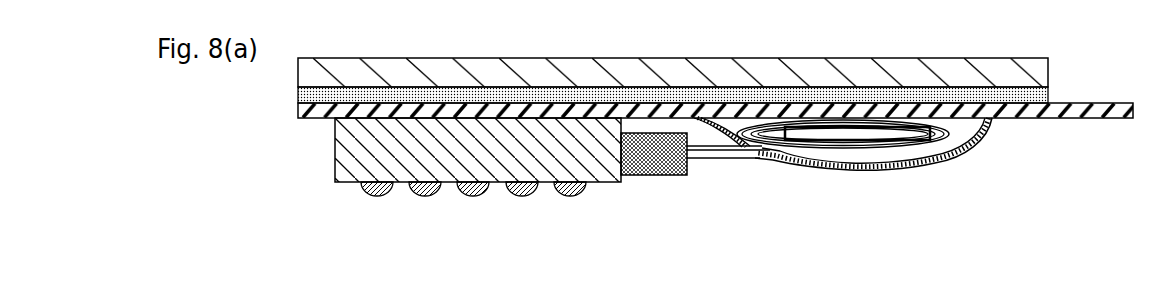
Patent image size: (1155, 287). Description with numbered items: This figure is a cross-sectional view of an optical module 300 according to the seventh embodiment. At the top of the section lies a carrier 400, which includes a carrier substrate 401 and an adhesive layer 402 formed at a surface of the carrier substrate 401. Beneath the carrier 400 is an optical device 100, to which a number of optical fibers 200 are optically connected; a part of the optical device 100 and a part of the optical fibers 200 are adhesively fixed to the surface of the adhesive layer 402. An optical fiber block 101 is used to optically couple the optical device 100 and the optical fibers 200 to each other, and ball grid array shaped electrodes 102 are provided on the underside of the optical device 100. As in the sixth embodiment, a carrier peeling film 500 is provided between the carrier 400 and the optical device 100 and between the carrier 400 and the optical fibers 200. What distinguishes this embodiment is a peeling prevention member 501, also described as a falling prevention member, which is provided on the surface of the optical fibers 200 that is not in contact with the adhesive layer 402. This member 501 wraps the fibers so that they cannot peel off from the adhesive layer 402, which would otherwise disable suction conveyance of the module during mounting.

The optical device 100 is at (466, 173).
The optical fiber block 101 is at (657, 176).
The ball grid array shaped electrodes 102 is at (587, 205).
The optical fibers 200 is at (903, 169).
The optical module 300 is at (686, 123).
The carrier 400 is at (700, 87).
The carrier substrate 401 is at (1029, 73).
The adhesive layer 402 is at (1023, 100).
The carrier peeling film 500 is at (1082, 119).
The peeling prevention member 501 is at (800, 170).